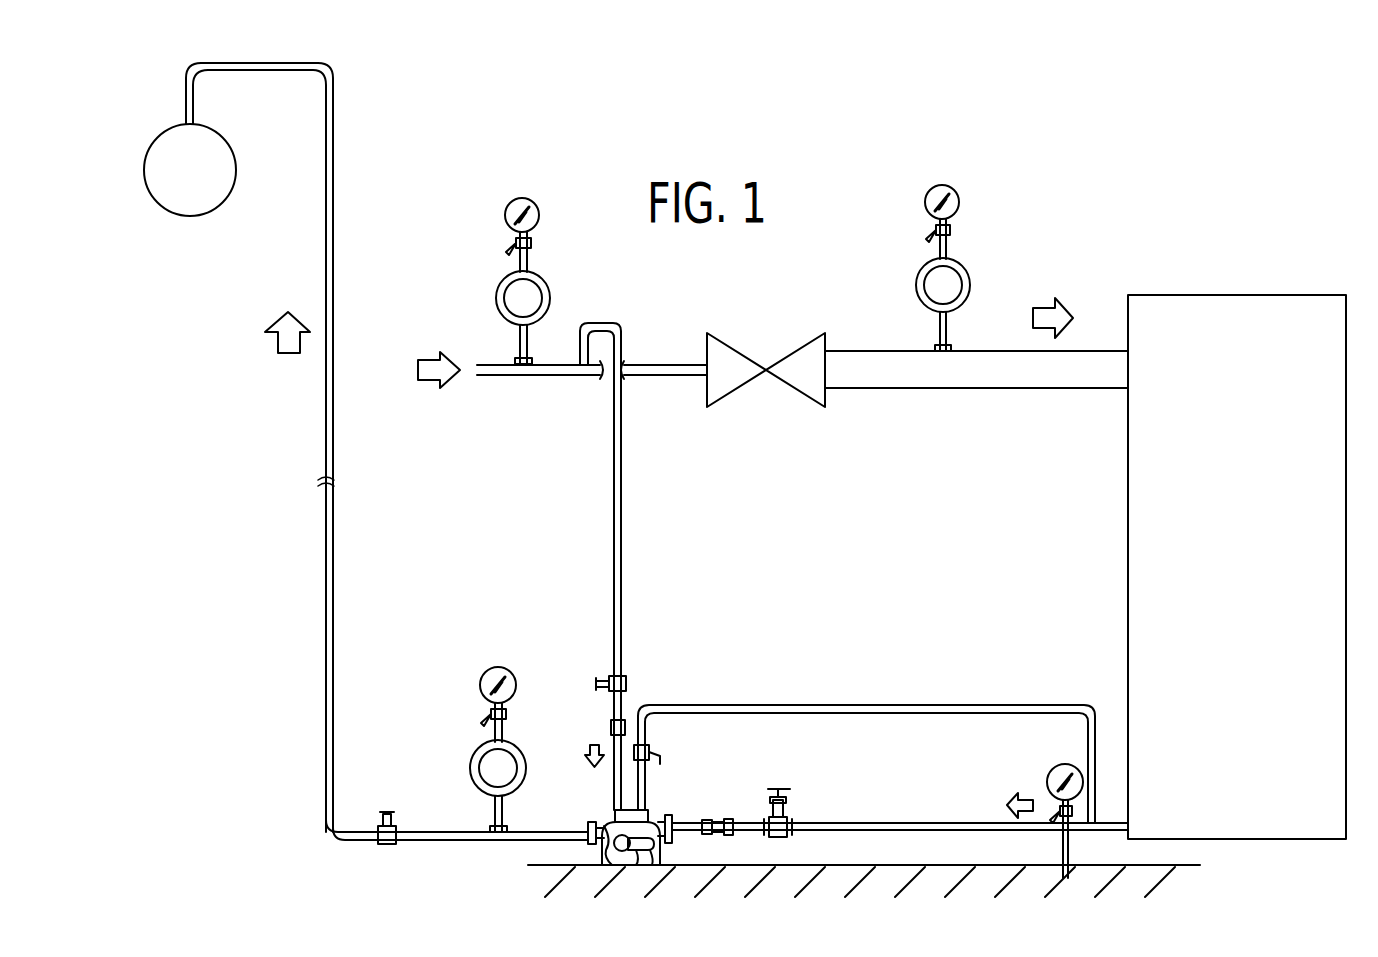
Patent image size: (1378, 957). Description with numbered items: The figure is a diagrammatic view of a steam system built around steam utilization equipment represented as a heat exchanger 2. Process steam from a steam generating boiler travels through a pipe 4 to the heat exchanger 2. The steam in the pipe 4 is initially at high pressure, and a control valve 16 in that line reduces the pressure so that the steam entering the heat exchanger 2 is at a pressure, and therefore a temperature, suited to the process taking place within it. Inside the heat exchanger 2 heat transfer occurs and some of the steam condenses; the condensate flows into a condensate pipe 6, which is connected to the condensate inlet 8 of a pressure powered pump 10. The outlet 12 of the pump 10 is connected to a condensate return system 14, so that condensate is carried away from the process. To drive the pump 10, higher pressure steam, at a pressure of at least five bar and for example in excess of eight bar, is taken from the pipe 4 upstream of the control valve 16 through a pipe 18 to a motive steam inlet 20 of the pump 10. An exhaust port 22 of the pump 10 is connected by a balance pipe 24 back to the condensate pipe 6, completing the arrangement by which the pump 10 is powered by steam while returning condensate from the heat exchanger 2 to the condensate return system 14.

The heat exchanger 2 is at (1244, 414).
The pipe 4 is at (540, 378).
The condensate pipe 6 is at (952, 822).
The condensate inlet 8 is at (660, 815).
The pressure powered pump 10 is at (600, 870).
The outlet 12 is at (590, 828).
The condensate return system 14 is at (222, 203).
The control valve 16 is at (745, 360).
The pipe 18 is at (622, 577).
The motive steam inlet 20 is at (622, 808).
The exhaust port 22 is at (645, 800).
The balance pipe 24 is at (818, 702).